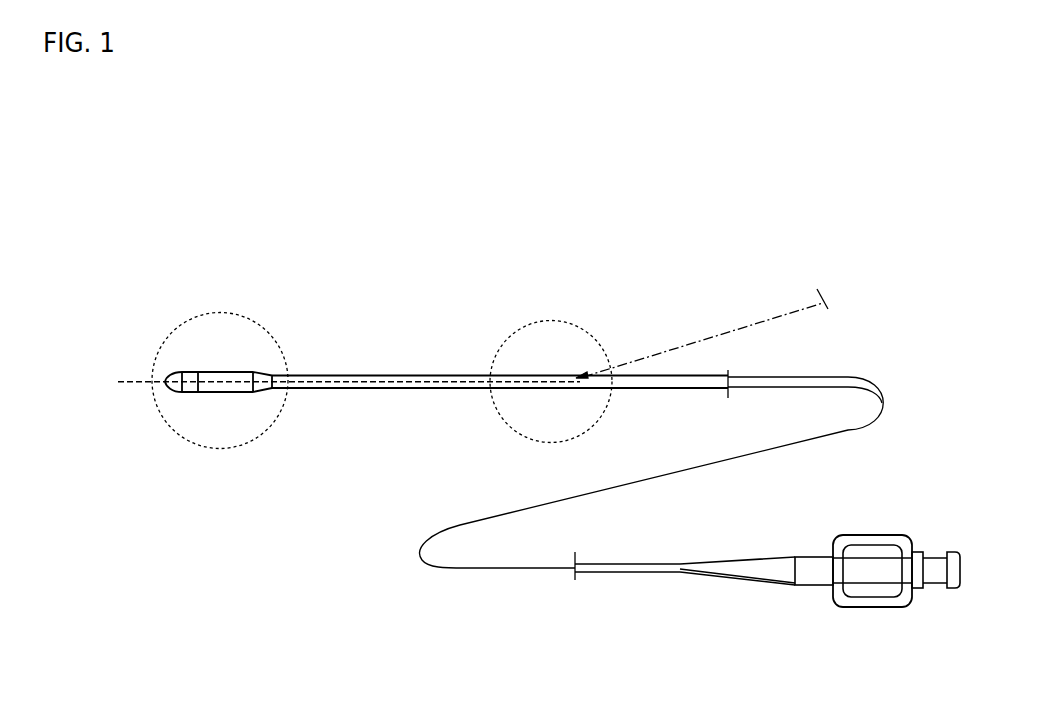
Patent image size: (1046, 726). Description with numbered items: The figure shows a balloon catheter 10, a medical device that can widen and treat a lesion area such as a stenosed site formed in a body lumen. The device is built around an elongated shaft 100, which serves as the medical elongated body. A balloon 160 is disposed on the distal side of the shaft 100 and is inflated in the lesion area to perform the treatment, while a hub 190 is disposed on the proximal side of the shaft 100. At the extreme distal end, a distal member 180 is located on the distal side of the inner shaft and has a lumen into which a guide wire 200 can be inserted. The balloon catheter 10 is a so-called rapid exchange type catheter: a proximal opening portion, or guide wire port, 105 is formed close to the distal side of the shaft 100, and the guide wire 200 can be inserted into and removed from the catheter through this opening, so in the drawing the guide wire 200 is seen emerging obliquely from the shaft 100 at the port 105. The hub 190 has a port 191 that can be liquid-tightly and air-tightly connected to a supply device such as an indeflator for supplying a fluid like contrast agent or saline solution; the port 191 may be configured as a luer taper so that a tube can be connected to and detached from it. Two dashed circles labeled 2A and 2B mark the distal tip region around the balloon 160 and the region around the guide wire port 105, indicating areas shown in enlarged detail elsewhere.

The balloon catheter 10 is at (169, 116).
The shaft 100 is at (373, 375).
The proximal opening portion (guide wire port) 105 is at (585, 377).
The balloon 160 is at (226, 372).
The distal member 180 is at (168, 391).
The hub 190 is at (877, 525).
The port 191 is at (952, 590).
The guide wire 200 is at (713, 336).
The detail region 2A is at (270, 426).
The detail region 2B is at (502, 420).